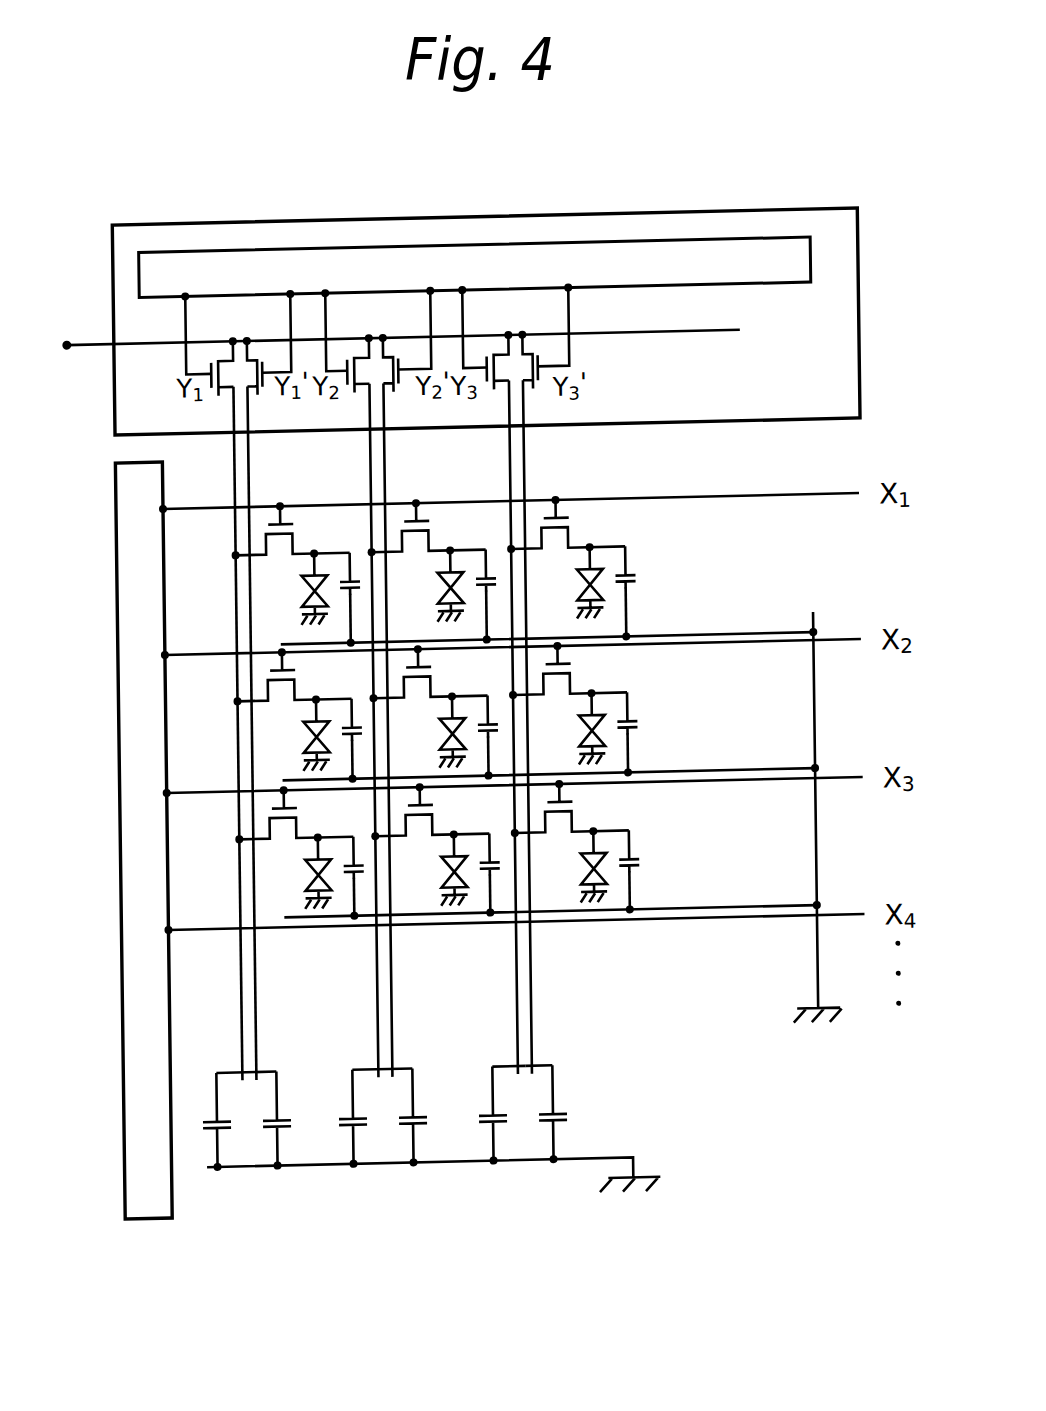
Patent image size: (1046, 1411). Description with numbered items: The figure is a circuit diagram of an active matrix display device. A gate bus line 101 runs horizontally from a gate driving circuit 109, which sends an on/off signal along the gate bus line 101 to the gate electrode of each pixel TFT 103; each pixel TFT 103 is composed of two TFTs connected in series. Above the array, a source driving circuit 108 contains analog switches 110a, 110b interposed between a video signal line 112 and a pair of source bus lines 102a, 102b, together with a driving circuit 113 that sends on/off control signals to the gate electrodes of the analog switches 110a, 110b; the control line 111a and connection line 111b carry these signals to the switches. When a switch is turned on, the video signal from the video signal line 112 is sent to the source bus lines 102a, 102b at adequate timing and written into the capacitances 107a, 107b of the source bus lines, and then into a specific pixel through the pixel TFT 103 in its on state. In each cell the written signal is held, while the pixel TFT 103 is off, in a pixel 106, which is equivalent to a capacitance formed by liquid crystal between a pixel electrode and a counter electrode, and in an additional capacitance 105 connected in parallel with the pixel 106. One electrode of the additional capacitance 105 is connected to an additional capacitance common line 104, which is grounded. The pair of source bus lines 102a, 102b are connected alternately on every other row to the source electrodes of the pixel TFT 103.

The gate bus line 101 is at (655, 504).
The source bus line 102a is at (237, 962).
The source bus line 102b is at (248, 1005).
The pixel TFT 103 is at (569, 524).
The additional capacitance common line 104 is at (733, 648).
The additional capacitance 105 is at (634, 583).
The pixel 106 is at (603, 604).
The capacitance of source bus line 107a is at (485, 1146).
The capacitance of source bus line 107b is at (548, 1106).
The source driving circuit 108 is at (372, 240).
The gate driving circuit 109 is at (116, 957).
The analog switch 110a is at (223, 396).
The analog switch 110b is at (254, 394).
The control line 111a is at (187, 313).
The connection line 111b is at (292, 328).
The video signal line 112 is at (104, 346).
The driving circuit 113 is at (183, 263).